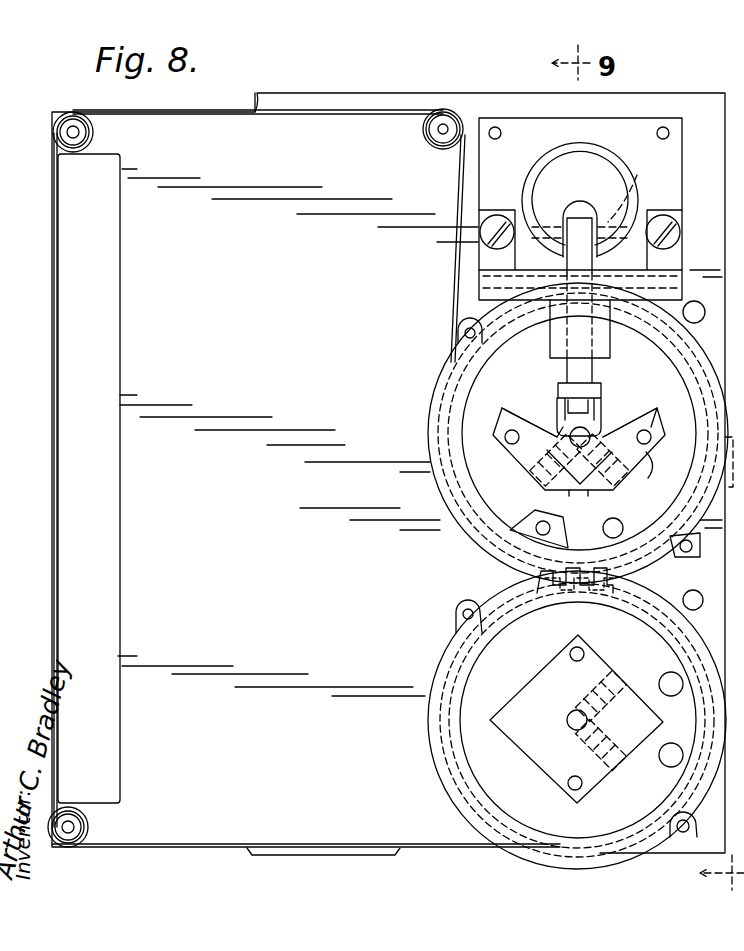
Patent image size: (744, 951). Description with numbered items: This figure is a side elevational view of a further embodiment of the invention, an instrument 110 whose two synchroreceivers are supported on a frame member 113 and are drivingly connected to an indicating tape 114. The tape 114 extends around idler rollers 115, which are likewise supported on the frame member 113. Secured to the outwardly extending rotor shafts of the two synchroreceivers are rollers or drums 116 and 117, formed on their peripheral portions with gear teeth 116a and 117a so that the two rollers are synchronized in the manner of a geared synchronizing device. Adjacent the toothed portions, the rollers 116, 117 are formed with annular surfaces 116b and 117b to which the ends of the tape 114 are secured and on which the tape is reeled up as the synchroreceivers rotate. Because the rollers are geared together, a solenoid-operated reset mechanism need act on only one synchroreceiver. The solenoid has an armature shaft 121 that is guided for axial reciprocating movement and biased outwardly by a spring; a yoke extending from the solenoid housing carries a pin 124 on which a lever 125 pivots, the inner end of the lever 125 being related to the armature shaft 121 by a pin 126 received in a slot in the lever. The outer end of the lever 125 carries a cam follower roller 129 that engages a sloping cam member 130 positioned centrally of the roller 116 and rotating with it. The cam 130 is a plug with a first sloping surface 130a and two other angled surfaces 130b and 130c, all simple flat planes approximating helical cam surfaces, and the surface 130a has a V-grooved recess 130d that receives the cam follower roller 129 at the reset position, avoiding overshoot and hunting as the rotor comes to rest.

The instrument 110 is at (420, 72).
The frame member 113 is at (205, 830).
The indicating tape 114 is at (58, 210).
The idler rollers 115 is at (82, 132).
The roller 116 is at (455, 487).
The gear teeth 116a is at (523, 570).
The annular surface 116b is at (473, 517).
The roller 117 is at (430, 672).
The gear teeth 117a is at (530, 590).
The annular surface 117b is at (448, 718).
The armature shaft 121 is at (588, 172).
The pin 124 is at (672, 272).
The lever 125 is at (575, 228).
The pin 126 is at (605, 193).
The cam follower roller 129 is at (558, 393).
The cam member 130 is at (493, 415).
The first sloping surface 130a is at (538, 370).
The angled surface 130b is at (640, 460).
The angled surface 130c is at (515, 448).
The V-grooved recess 130d is at (557, 474).